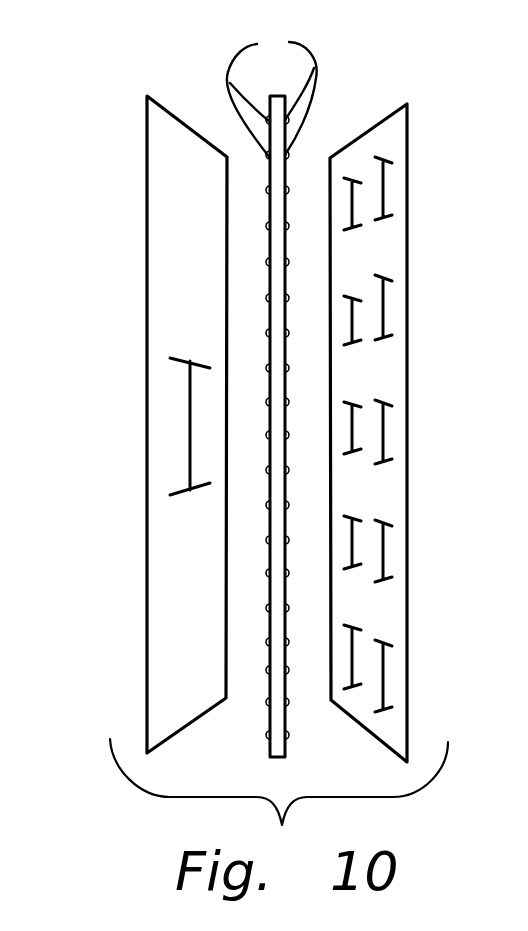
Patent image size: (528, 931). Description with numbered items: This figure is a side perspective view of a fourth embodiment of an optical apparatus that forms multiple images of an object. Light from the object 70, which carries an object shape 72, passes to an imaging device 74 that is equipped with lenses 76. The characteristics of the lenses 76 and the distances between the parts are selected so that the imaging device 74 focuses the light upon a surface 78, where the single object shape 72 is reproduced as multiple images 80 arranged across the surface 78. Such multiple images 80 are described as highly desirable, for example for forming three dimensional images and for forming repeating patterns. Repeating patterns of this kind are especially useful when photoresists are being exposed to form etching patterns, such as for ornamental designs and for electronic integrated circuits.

The object 70 is at (147, 688).
The object shape 72 is at (190, 417).
The imaging device 74 is at (284, 745).
The lenses 76 is at (272, 95).
The surface 78 is at (407, 693).
The multiple images 80 is at (385, 183).